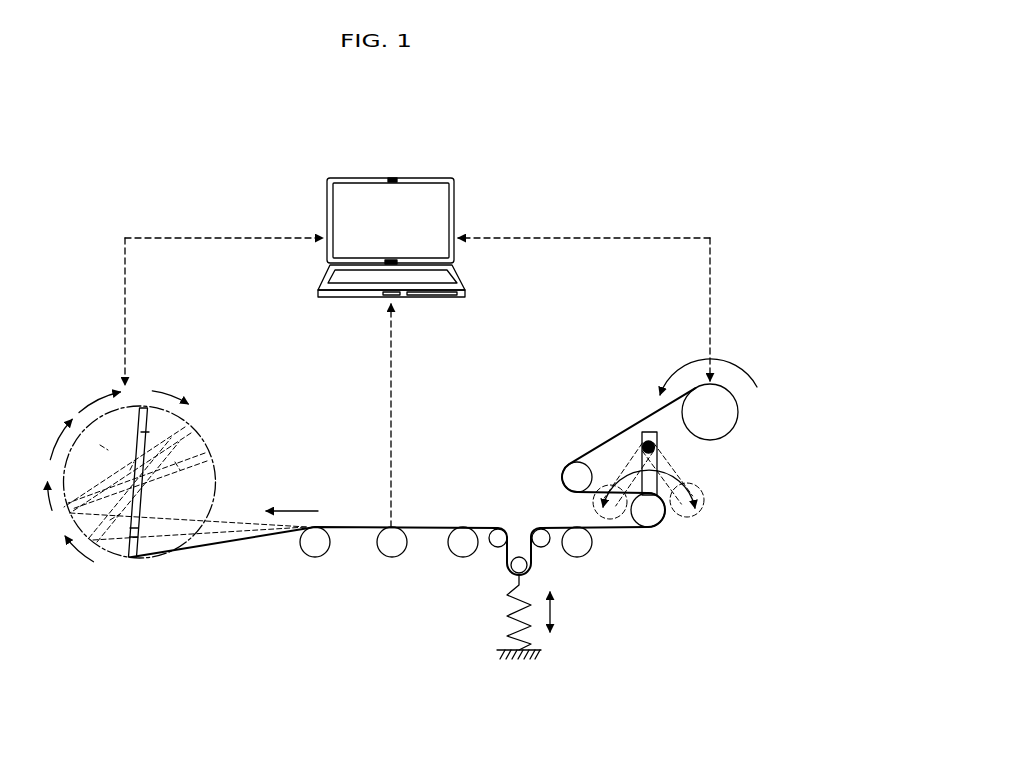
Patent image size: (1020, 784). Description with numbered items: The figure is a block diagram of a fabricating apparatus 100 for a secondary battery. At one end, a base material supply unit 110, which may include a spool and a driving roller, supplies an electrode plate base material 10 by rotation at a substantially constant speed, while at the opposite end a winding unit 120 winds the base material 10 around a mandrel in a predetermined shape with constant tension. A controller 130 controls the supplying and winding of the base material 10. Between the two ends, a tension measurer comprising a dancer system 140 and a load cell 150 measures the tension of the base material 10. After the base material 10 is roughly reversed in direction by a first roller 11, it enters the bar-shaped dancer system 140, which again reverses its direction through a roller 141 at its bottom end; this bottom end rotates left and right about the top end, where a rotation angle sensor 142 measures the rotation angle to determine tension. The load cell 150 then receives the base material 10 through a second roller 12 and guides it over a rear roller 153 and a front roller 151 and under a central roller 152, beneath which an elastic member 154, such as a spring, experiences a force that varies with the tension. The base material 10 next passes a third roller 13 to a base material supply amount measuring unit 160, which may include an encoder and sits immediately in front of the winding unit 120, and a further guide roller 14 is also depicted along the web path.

The fabricating apparatus 100 is at (746, 154).
The controller 130 is at (398, 178).
The winding unit 120 is at (113, 562).
The electrode plate base material 10 is at (633, 425).
The guide roller 14 is at (315, 560).
The base material supply amount measuring unit 160 is at (392, 559).
The third roller 13 is at (462, 557).
The load cell 150 is at (521, 575).
The rear roller 153 is at (500, 535).
The central roller 152 is at (519, 560).
The front roller 151 is at (544, 545).
The elastic member 154 is at (505, 563).
The second roller 12 is at (588, 551).
The first roller 11 is at (567, 477).
The base material supply unit 110 is at (722, 432).
The dancer system 140 is at (666, 514).
The roller 141 is at (652, 517).
The rotation angle sensor 142 is at (660, 449).